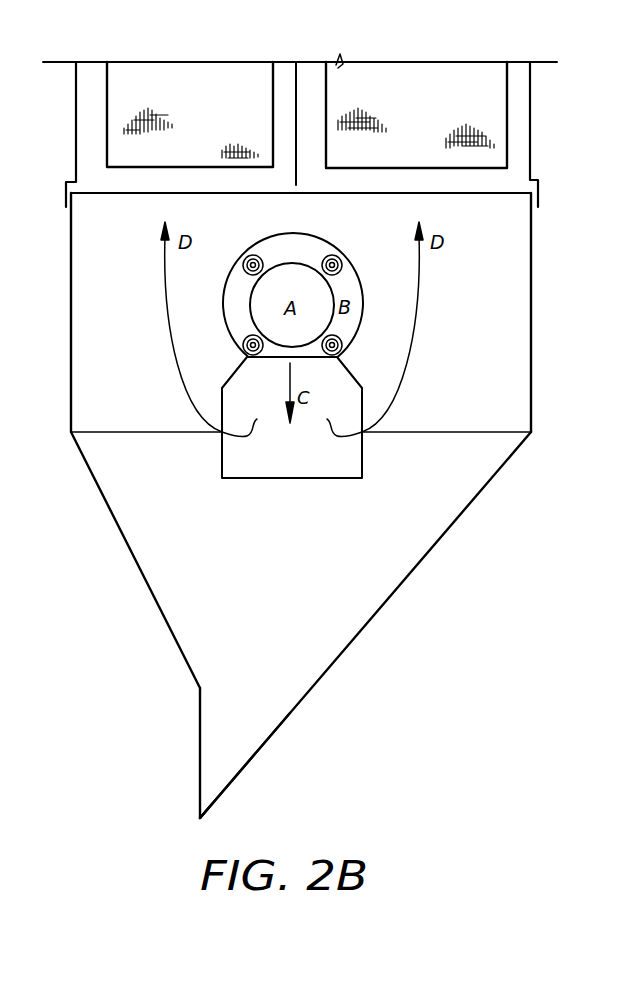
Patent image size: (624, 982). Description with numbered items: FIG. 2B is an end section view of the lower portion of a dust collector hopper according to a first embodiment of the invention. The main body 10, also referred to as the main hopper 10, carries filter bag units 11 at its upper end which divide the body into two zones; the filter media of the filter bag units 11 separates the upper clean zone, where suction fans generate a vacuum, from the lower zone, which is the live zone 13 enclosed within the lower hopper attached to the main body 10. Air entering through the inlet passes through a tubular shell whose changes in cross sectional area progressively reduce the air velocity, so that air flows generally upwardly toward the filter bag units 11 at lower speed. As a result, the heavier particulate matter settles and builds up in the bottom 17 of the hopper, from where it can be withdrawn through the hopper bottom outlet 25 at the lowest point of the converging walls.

The main body 10 is at (70, 279).
The filter bag units 11 is at (120, 118).
The live zone 13 is at (325, 617).
The bottom 17 is at (255, 725).
The hopper bottom outlet 25 is at (198, 798).